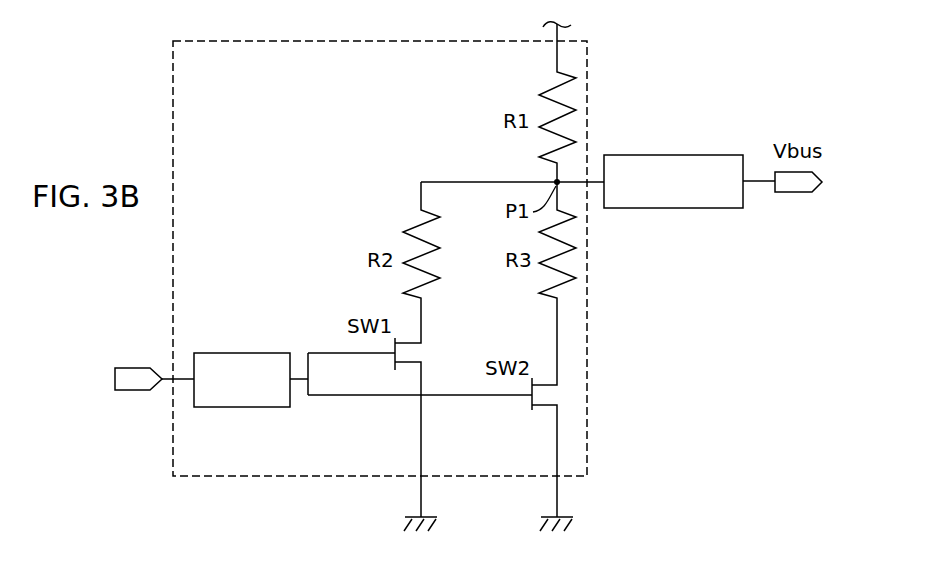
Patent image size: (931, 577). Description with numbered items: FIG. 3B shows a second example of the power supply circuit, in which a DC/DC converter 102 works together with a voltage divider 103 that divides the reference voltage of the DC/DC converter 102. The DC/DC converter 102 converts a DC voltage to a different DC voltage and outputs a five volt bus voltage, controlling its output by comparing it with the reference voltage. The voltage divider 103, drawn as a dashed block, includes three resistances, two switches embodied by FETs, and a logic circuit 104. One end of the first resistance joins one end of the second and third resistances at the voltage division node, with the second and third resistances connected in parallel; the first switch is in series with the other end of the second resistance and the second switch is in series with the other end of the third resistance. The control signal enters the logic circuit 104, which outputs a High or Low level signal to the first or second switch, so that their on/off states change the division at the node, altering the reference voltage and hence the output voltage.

The DC/DC converter 102 is at (664, 155).
The voltage divider 103 is at (590, 318).
The logic circuit 104 is at (227, 353).